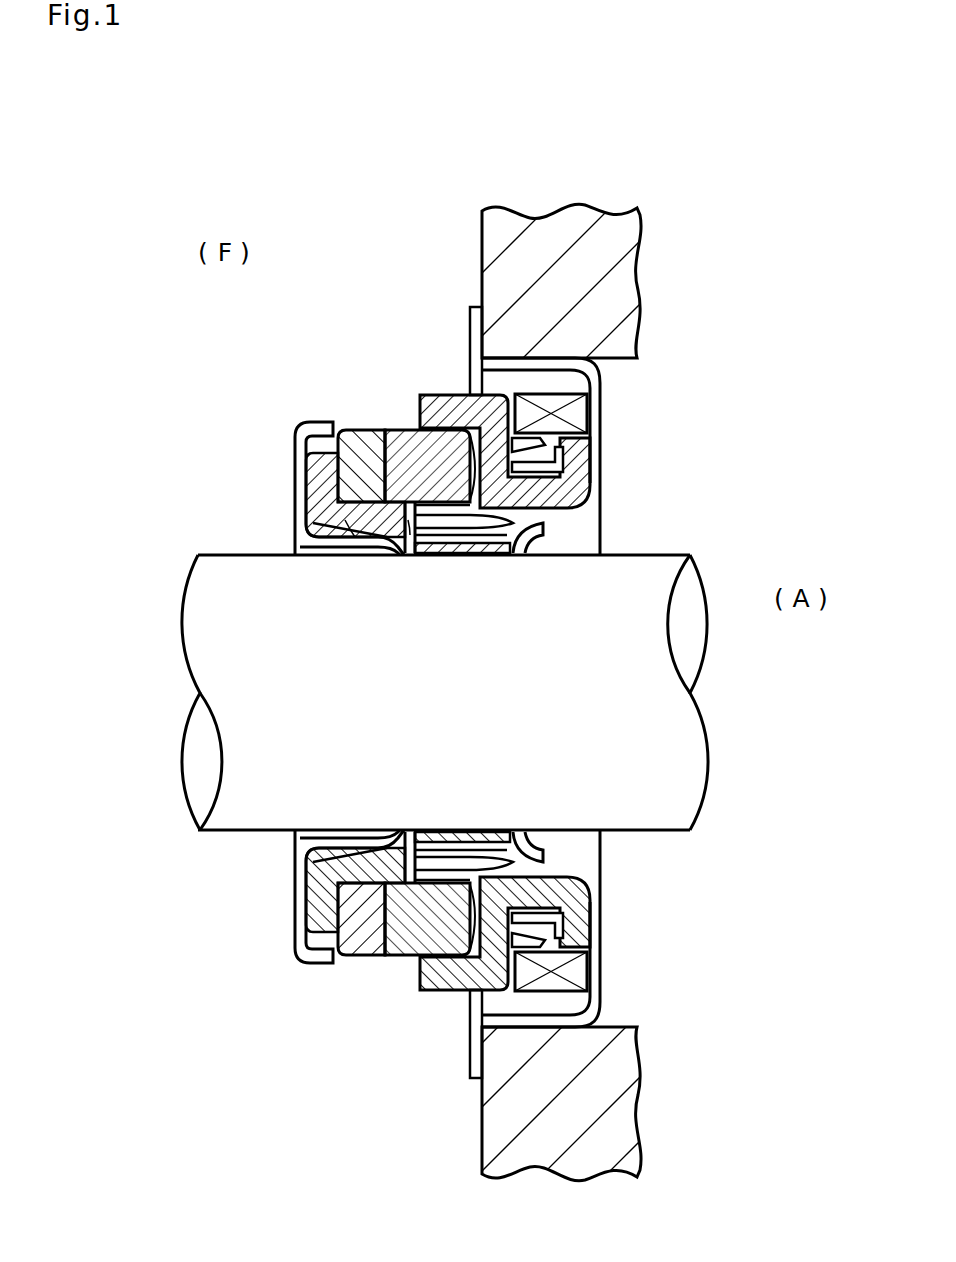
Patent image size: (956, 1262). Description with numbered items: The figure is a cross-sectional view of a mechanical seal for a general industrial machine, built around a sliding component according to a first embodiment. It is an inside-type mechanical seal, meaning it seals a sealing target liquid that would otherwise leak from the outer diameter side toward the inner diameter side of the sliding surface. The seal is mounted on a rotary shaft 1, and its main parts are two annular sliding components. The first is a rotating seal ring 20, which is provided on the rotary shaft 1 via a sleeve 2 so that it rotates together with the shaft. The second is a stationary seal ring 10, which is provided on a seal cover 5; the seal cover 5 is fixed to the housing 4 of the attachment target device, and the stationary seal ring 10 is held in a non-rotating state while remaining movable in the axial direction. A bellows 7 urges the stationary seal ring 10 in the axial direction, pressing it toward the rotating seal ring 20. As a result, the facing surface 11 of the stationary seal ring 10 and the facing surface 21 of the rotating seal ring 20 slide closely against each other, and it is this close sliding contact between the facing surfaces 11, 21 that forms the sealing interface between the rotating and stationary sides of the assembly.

The rotary shaft 1 is at (222, 555).
The sleeve 2 is at (303, 477).
The housing 4 is at (495, 248).
The seal cover 5 is at (594, 387).
The bellows 7 is at (580, 415).
The stationary seal ring 10 is at (407, 467).
The facing surface 11 is at (375, 465).
The rotating seal ring 20 is at (360, 448).
The facing surface 21 is at (405, 470).